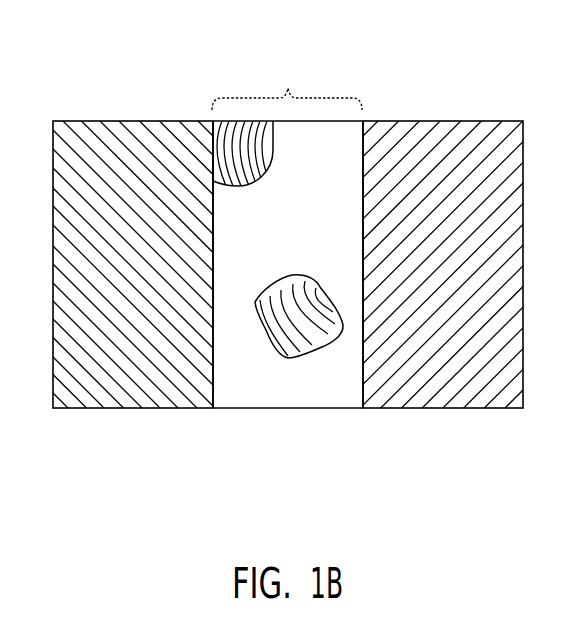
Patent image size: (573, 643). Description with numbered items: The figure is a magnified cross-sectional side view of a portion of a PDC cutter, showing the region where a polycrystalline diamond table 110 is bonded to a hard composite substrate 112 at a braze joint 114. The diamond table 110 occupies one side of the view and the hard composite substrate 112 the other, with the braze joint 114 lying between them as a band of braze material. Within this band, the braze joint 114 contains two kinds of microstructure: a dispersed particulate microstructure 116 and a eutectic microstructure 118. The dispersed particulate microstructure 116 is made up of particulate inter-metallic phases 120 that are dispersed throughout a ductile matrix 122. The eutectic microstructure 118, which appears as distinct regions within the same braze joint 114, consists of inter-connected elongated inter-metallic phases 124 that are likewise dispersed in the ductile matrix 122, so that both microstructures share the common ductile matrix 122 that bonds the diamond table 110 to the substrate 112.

The polycrystalline diamond table 110 is at (180, 282).
The hard composite substrate 112 is at (435, 253).
The braze joint 114 is at (287, 84).
The dispersed particulate microstructure 116 is at (238, 411).
The eutectic microstructure 118 is at (249, 120).
The particulate inter-metallic phases 120 is at (257, 372).
The ductile matrix 122 is at (233, 130).
The inter-connected elongated inter-metallic phases 124 is at (214, 148).